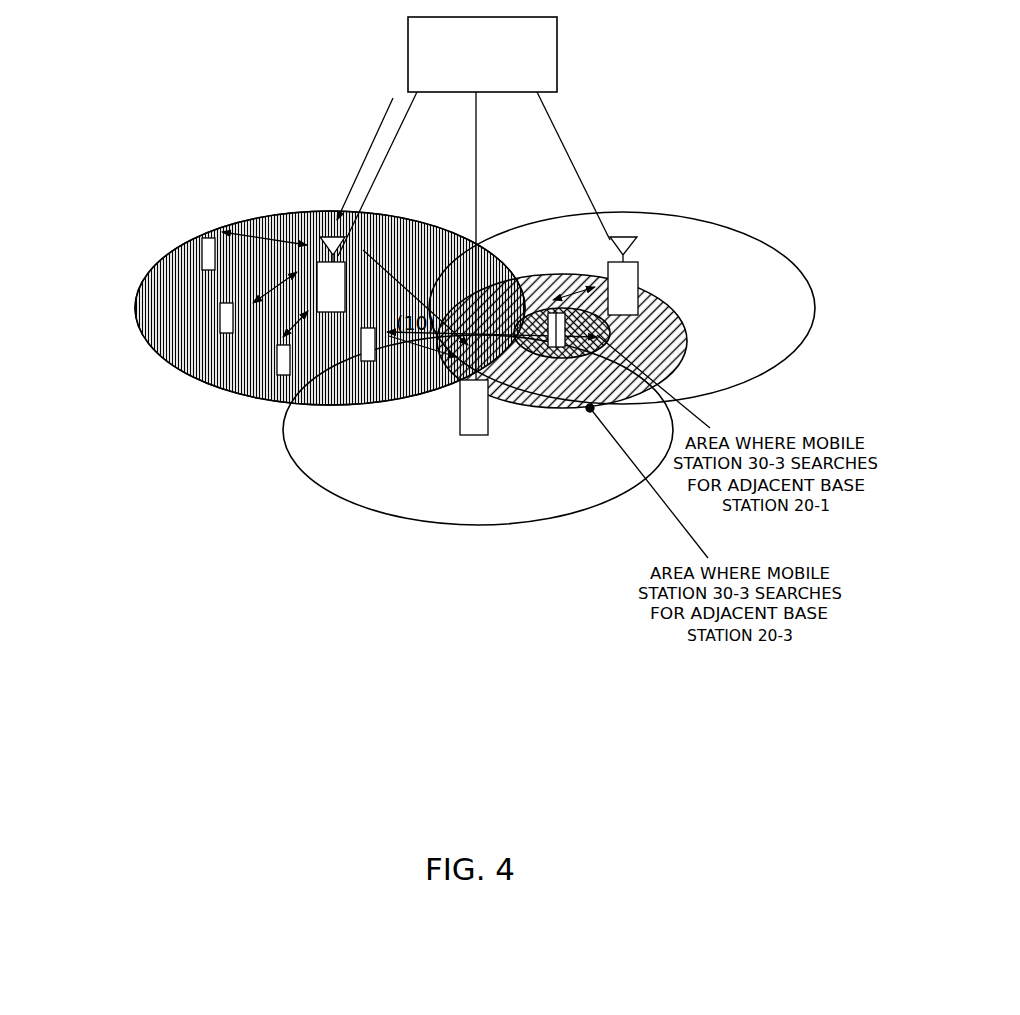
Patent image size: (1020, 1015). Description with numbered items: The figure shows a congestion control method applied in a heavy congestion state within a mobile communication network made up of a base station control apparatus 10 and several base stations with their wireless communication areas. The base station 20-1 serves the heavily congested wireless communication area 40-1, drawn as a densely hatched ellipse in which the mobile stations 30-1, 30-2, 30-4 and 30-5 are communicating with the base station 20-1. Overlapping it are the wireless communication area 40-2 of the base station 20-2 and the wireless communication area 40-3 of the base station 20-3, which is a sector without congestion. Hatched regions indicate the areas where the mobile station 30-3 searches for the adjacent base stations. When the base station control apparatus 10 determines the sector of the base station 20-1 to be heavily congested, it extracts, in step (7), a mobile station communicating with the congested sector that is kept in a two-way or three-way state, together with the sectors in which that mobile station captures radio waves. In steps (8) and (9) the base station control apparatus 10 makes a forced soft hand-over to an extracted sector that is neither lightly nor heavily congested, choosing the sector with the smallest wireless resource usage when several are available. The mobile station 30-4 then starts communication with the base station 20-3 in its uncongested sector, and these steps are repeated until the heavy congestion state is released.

The base station control apparatus 10 is at (557, 40).
The extraction step 7 is at (474, 206).
The forced soft hand-over step 8 is at (365, 159).
The forced soft hand-over step 9 is at (415, 292).
The base station 20-1 is at (347, 245).
The base station 20-2 is at (632, 243).
The base station 20-3 is at (490, 400).
The mobile station 30-1 is at (220, 323).
The mobile station 30-2 is at (275, 367).
The mobile station 30-3 is at (687, 345).
The mobile station 30-4 is at (362, 352).
The mobile station 30-5 is at (202, 263).
The wireless communication area 40-1 is at (167, 268).
The wireless communication area 40-2 is at (780, 313).
The wireless communication area 40-3 is at (357, 460).